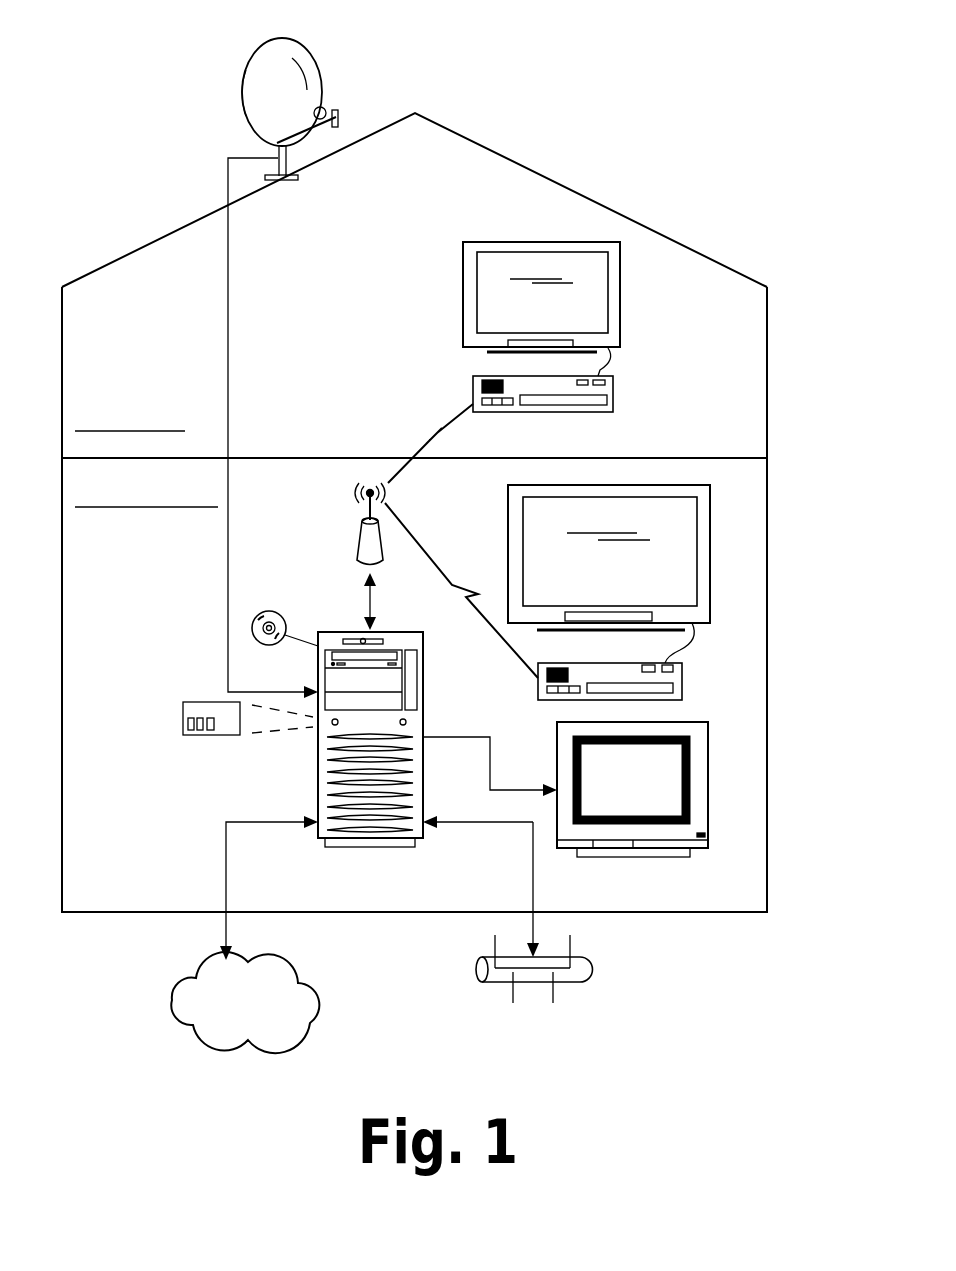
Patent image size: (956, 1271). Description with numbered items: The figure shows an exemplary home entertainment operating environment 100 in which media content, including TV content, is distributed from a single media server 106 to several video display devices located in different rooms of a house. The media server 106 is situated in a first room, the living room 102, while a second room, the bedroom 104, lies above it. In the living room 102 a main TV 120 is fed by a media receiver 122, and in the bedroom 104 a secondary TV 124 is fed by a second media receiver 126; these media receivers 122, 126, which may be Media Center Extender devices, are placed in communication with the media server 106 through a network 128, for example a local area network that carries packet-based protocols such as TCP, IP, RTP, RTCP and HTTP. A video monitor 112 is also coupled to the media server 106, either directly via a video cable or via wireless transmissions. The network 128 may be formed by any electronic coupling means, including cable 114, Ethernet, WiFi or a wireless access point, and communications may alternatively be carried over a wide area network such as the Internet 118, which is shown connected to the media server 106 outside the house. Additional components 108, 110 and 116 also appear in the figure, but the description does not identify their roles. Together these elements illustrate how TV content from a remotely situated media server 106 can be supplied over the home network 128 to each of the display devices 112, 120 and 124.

The home entertainment operating environment 100 is at (613, 115).
The living room 102 is at (693, 912).
The bedroom 104 is at (193, 220).
The media server 106 is at (337, 630).
The optical disc 108 is at (259, 613).
The remote control 110 is at (182, 717).
The video monitor 112 is at (708, 790).
The cable 114 is at (590, 968).
The satellite dish 116 is at (268, 62).
The Internet 118 is at (172, 1005).
The main TV 120 is at (710, 558).
The media receiver 122 is at (682, 678).
The secondary TV 124 is at (528, 242).
The media receiver 126 is at (613, 401).
The network 128 is at (358, 543).